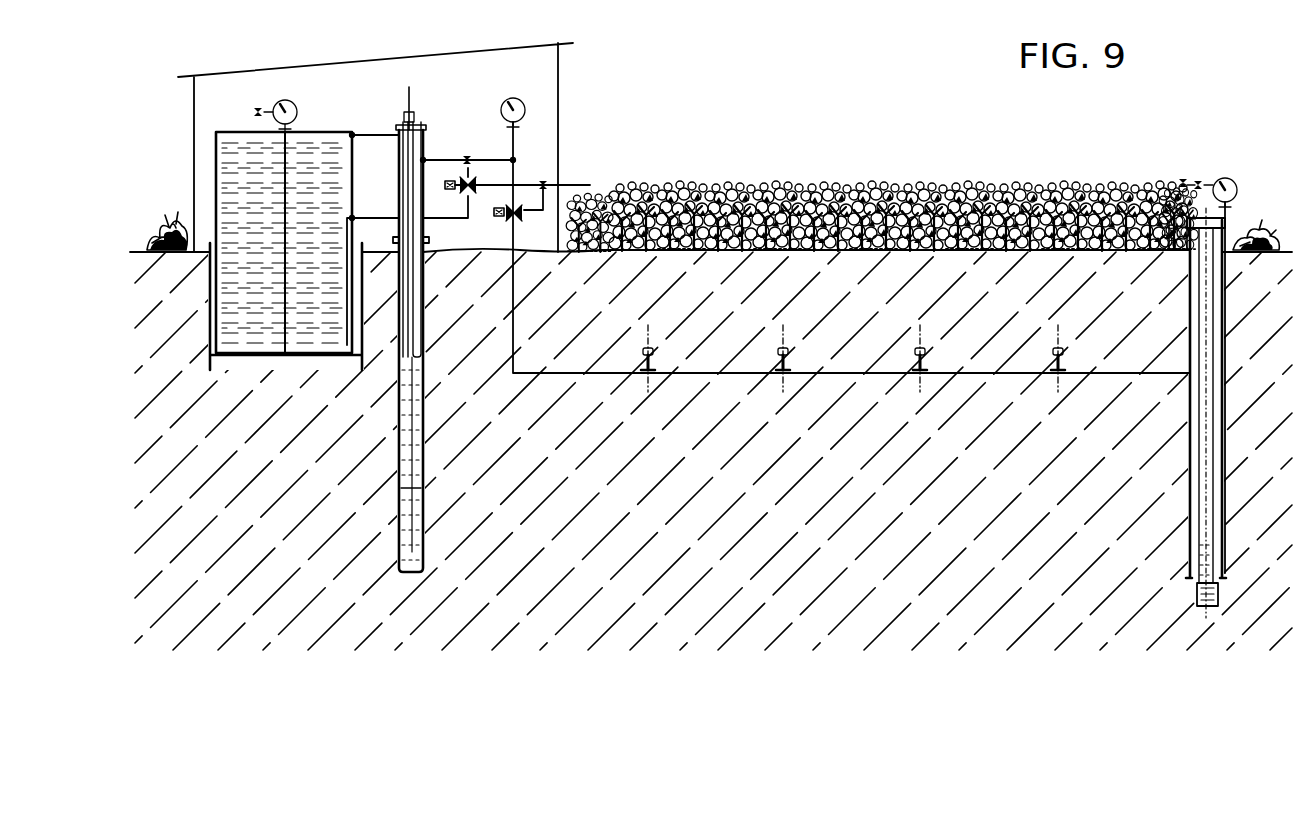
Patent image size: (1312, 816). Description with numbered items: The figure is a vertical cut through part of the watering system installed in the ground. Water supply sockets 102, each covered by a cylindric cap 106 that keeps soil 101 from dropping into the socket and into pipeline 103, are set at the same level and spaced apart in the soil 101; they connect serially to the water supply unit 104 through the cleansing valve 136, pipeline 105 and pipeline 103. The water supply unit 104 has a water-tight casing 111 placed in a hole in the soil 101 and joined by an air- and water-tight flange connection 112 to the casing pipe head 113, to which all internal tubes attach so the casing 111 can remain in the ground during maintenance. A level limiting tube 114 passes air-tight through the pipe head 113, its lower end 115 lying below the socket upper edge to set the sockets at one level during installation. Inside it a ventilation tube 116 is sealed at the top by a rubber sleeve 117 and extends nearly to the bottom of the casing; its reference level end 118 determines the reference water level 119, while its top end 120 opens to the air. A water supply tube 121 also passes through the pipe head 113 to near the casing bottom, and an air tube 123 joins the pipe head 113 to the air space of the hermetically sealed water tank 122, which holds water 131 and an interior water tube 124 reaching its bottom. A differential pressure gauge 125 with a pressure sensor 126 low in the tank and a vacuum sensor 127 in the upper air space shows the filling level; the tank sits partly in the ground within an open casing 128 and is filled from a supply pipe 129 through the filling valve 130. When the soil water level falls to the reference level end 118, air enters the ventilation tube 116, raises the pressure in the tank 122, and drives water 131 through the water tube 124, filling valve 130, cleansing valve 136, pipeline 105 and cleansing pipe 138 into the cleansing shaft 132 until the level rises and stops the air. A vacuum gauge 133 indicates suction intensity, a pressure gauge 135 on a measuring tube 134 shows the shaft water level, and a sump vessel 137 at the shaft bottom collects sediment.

The soil 101 is at (888, 317).
The water supply socket 102 is at (654, 364).
The pipeline 103 is at (652, 377).
The water supply unit 104 is at (424, 403).
The pipeline 105 is at (846, 376).
The cylindric cap 106 is at (645, 354).
The casing 111 is at (423, 445).
The flange connection 112 is at (428, 238).
The casing pipe head 113 is at (425, 156).
The level limiting tube 114 is at (420, 308).
The lower end of limiting tube 115 is at (419, 357).
The ventilation tube 116 is at (424, 489).
The rubber sleeve 117 is at (425, 126).
The reference level end 118 is at (420, 552).
The reference water level 119 is at (1200, 548).
The ventilation tube top end 120 is at (413, 92).
The water supply tube 121 is at (423, 535).
The water tank 122 is at (357, 198).
The air tube 123 is at (378, 133).
The water tube 124 is at (342, 298).
The differential pressure gauge 125 is at (295, 102).
The pressure sensor 126 is at (290, 240).
The vacuum sensor 127 is at (290, 138).
The open casing 128 is at (208, 318).
The supply pipe 129 is at (576, 183).
The filling valve 130 is at (450, 194).
The water 131 is at (257, 254).
The cleansing shaft 132 is at (1192, 336).
The vacuum gauge 133 is at (542, 91).
The measuring tube 134 is at (1224, 400).
The pressure gauge 135 is at (1257, 169).
The cleansing valve 136 is at (516, 222).
The sump vessel 137 is at (1220, 598).
The cleansing pipe 138 is at (1188, 475).